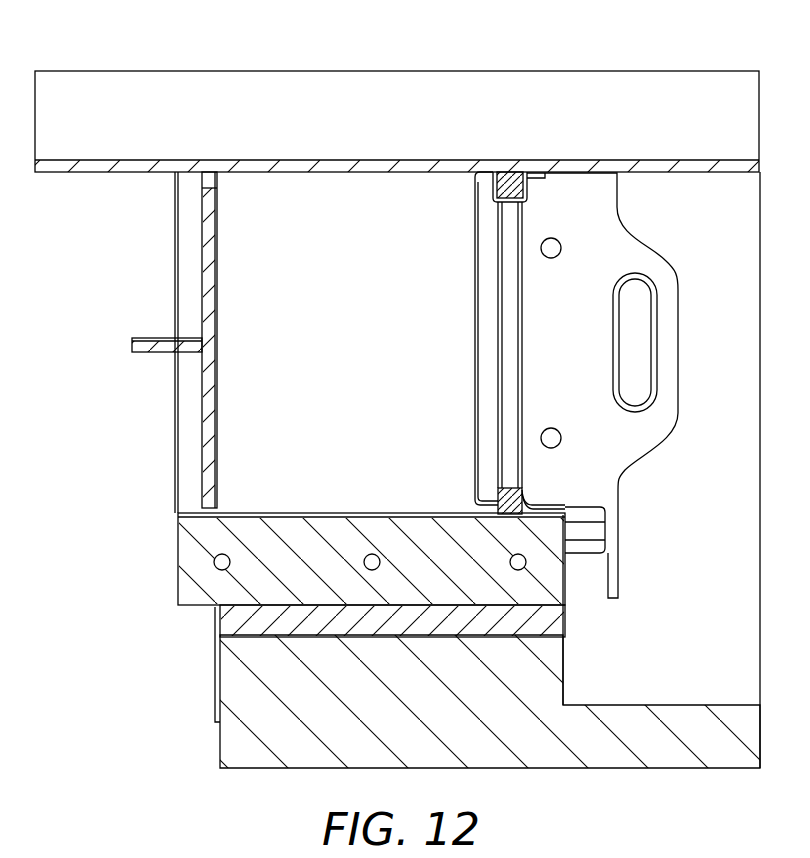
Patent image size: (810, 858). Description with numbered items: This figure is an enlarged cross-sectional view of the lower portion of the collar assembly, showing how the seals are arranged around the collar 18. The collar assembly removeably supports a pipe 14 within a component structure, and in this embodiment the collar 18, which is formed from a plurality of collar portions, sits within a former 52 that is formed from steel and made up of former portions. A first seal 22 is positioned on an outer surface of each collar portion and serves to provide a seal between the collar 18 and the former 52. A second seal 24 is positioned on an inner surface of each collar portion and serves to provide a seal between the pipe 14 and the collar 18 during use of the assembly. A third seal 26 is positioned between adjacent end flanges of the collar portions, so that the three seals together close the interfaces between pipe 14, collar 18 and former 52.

The pipe 14 is at (110, 87).
The collar 18 is at (582, 355).
The first seal 22 is at (493, 498).
The second seal 24 is at (508, 180).
The third seal 26 is at (510, 296).
The former 52 is at (190, 548).